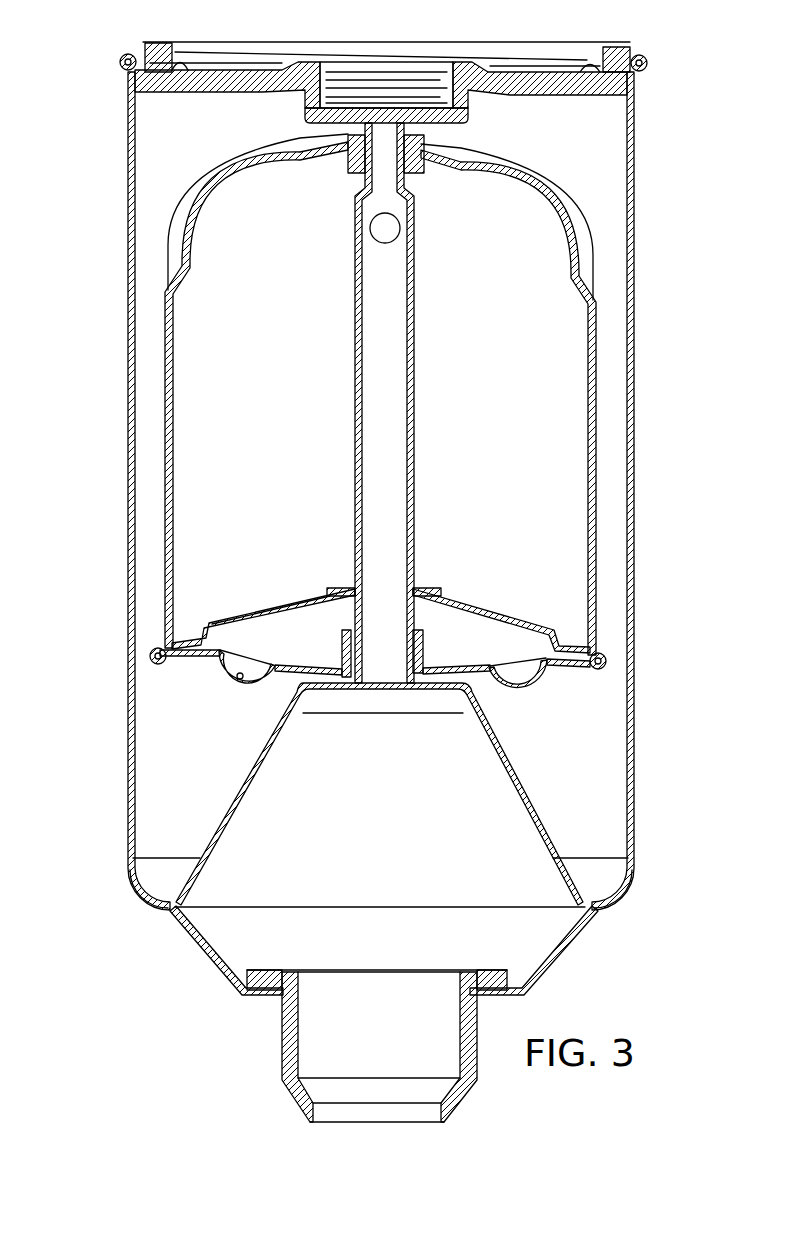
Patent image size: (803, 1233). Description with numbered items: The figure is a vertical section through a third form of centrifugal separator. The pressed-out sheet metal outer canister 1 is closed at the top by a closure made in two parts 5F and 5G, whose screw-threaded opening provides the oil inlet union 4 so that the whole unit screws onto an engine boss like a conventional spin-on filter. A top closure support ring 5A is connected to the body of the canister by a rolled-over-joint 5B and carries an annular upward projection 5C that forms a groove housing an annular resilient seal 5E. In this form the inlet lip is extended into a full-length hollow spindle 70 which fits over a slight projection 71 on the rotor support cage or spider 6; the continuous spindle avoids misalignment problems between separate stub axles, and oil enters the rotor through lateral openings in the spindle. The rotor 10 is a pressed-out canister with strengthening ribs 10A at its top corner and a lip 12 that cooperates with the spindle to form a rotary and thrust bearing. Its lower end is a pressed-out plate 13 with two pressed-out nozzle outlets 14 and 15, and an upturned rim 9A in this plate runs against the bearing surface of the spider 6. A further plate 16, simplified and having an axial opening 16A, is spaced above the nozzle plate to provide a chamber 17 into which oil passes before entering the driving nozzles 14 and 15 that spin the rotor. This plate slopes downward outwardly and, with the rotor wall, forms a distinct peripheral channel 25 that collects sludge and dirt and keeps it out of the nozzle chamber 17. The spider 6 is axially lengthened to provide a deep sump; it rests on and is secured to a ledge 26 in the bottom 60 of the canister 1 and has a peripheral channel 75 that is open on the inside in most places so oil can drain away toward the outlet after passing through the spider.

The outer canister 1 is at (635, 373).
The oil inlet union 4 is at (395, 68).
The top closure support ring 5A is at (215, 70).
The rolled-over-joint 5B is at (122, 70).
The annular upward projection 5C is at (182, 57).
The annular resilient seal 5E is at (163, 41).
The top closure part 5F is at (220, 88).
The top closure part 5G is at (310, 115).
The rotor support cage 6 is at (287, 730).
The upturned rim 9A is at (337, 655).
The rotor 10 is at (176, 398).
The strengthening ribs 10A is at (203, 182).
The lip 12 is at (392, 232).
The pressed out plate 13 is at (202, 648).
The nozzle outlet 14 is at (252, 693).
The nozzle outlet 15 is at (527, 693).
The plate 16 is at (267, 607).
The axial opening 16A is at (348, 590).
The chamber 17 is at (238, 630).
The peripheral channel 25 is at (178, 631).
The ledge 26 is at (140, 907).
The bottom 60 is at (595, 912).
The hollow spindle 70 is at (413, 437).
The projection 71 is at (380, 690).
The peripheral channel 75 is at (608, 880).